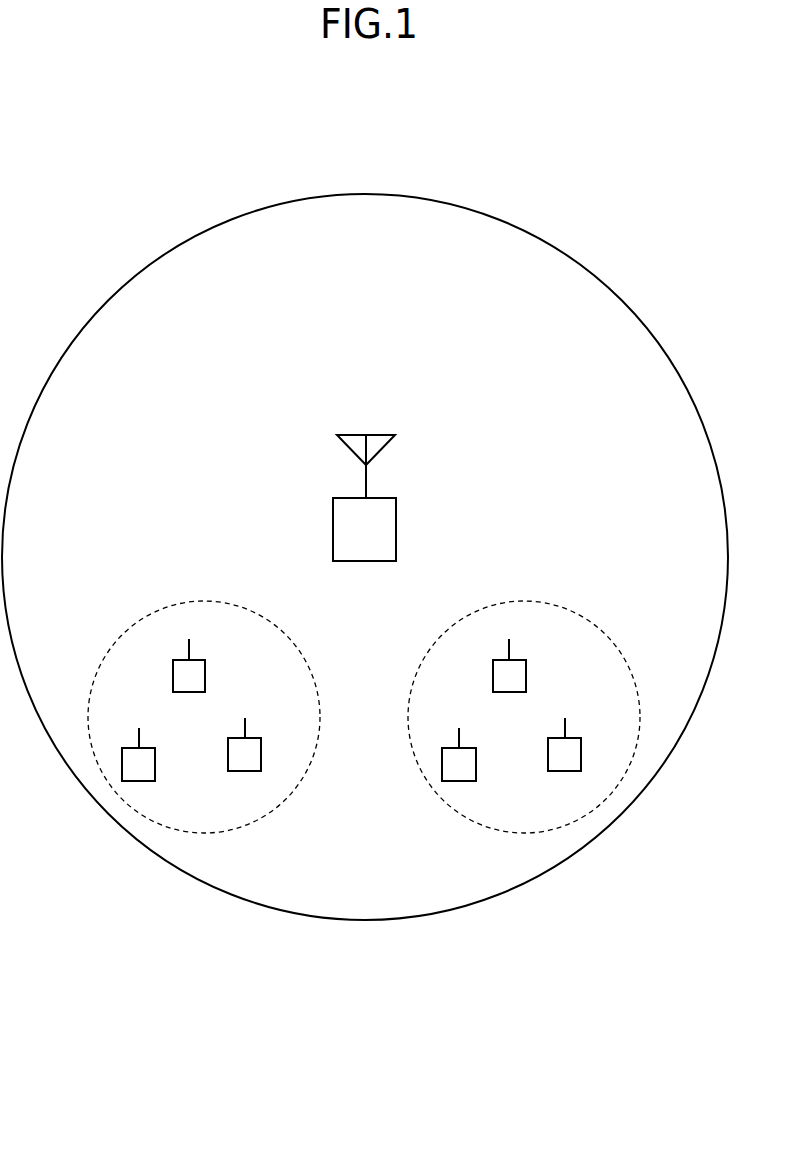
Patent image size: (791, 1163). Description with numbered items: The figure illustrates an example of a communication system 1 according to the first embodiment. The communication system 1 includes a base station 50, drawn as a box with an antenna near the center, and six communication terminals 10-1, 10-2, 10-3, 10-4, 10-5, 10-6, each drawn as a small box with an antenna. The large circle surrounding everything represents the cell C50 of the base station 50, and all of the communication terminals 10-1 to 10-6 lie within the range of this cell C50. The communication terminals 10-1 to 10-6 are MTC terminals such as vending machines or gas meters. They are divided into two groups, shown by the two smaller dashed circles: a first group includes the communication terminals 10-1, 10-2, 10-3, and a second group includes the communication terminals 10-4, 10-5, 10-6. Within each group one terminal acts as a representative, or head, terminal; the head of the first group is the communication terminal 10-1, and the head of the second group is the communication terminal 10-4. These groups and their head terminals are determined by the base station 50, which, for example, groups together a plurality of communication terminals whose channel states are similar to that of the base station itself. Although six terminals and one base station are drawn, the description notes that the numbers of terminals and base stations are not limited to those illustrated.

The communication system 1 is at (338, 166).
The cell C50 is at (563, 252).
The base station 50 is at (396, 497).
The communication terminal 10-1 is at (205, 672).
The communication terminal 10-2 is at (150, 748).
The communication terminal 10-3 is at (256, 738).
The communication terminal 10-4 is at (526, 672).
The communication terminal 10-5 is at (470, 748).
The communication terminal 10-6 is at (576, 738).